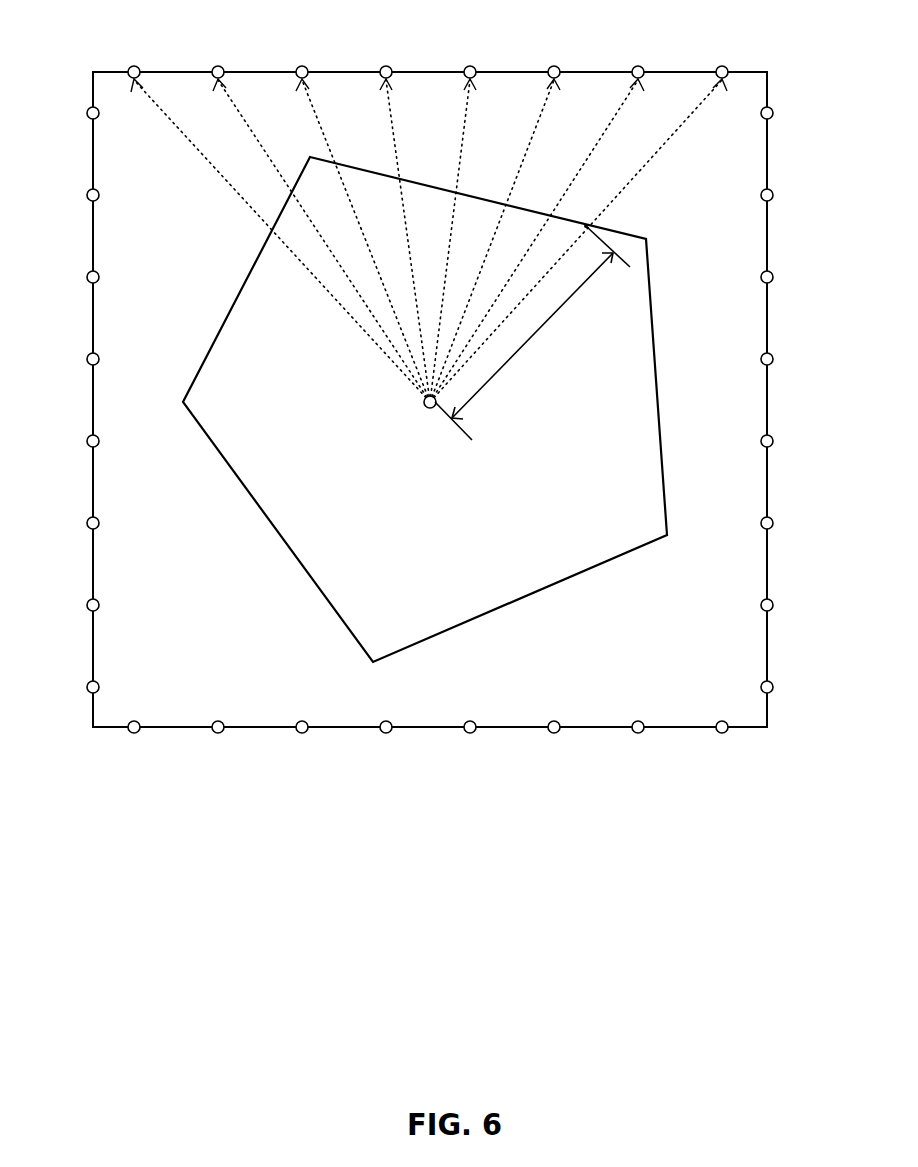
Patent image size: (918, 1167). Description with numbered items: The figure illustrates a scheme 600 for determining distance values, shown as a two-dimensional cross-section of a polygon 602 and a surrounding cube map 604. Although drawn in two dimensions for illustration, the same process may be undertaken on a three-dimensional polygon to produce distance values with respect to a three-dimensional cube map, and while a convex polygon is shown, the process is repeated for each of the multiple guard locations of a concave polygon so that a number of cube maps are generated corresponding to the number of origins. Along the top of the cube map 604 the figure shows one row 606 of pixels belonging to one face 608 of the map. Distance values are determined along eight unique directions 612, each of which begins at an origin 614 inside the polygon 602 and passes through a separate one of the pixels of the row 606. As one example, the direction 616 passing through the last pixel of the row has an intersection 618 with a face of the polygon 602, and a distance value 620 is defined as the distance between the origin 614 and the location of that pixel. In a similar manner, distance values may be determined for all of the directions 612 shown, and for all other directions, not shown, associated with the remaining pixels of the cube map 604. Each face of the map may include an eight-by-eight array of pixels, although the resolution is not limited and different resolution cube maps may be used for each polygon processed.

The scheme 600 is at (153, 868).
The polygon 602 is at (410, 604).
The cube map 604 is at (777, 738).
The row of pixels 606 is at (770, 32).
The face 608 is at (103, 72).
The directions 612 is at (222, 203).
The origin 614 is at (426, 410).
The direction 616 is at (665, 133).
The intersection 618 is at (587, 227).
The distance value 620 is at (533, 337).